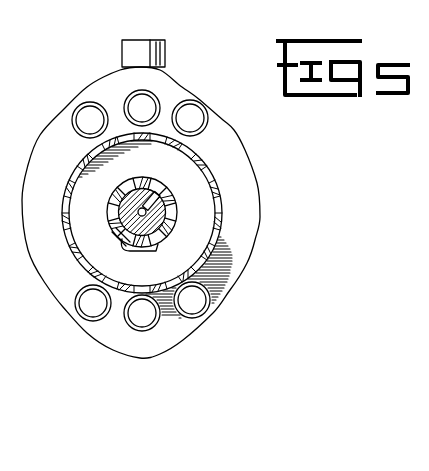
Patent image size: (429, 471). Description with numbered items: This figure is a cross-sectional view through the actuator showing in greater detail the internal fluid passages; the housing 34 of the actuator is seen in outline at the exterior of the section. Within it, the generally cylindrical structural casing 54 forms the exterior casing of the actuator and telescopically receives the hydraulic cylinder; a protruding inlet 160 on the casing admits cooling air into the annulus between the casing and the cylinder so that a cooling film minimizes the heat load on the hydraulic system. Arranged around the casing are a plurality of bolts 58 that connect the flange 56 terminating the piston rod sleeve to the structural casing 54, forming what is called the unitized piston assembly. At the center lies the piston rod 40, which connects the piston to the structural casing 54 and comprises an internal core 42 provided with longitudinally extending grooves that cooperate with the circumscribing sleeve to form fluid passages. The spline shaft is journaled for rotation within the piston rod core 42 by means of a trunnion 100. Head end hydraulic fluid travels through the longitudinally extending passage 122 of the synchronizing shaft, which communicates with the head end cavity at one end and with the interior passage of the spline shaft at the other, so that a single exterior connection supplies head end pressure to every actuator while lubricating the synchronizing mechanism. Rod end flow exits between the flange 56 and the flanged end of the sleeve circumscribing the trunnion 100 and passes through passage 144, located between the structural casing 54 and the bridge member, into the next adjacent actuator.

The housing body 34 is at (234, 129).
The inlet 160 is at (152, 38).
The bolts 58 is at (194, 113).
The structural casing 54 is at (210, 170).
The flange 56 is at (188, 207).
The trunnion 100 is at (162, 244).
The piston rod 40 is at (108, 199).
The internal core 42 is at (109, 231).
The longitudinally extending passage 122 is at (171, 172).
The passage 144 is at (146, 251).